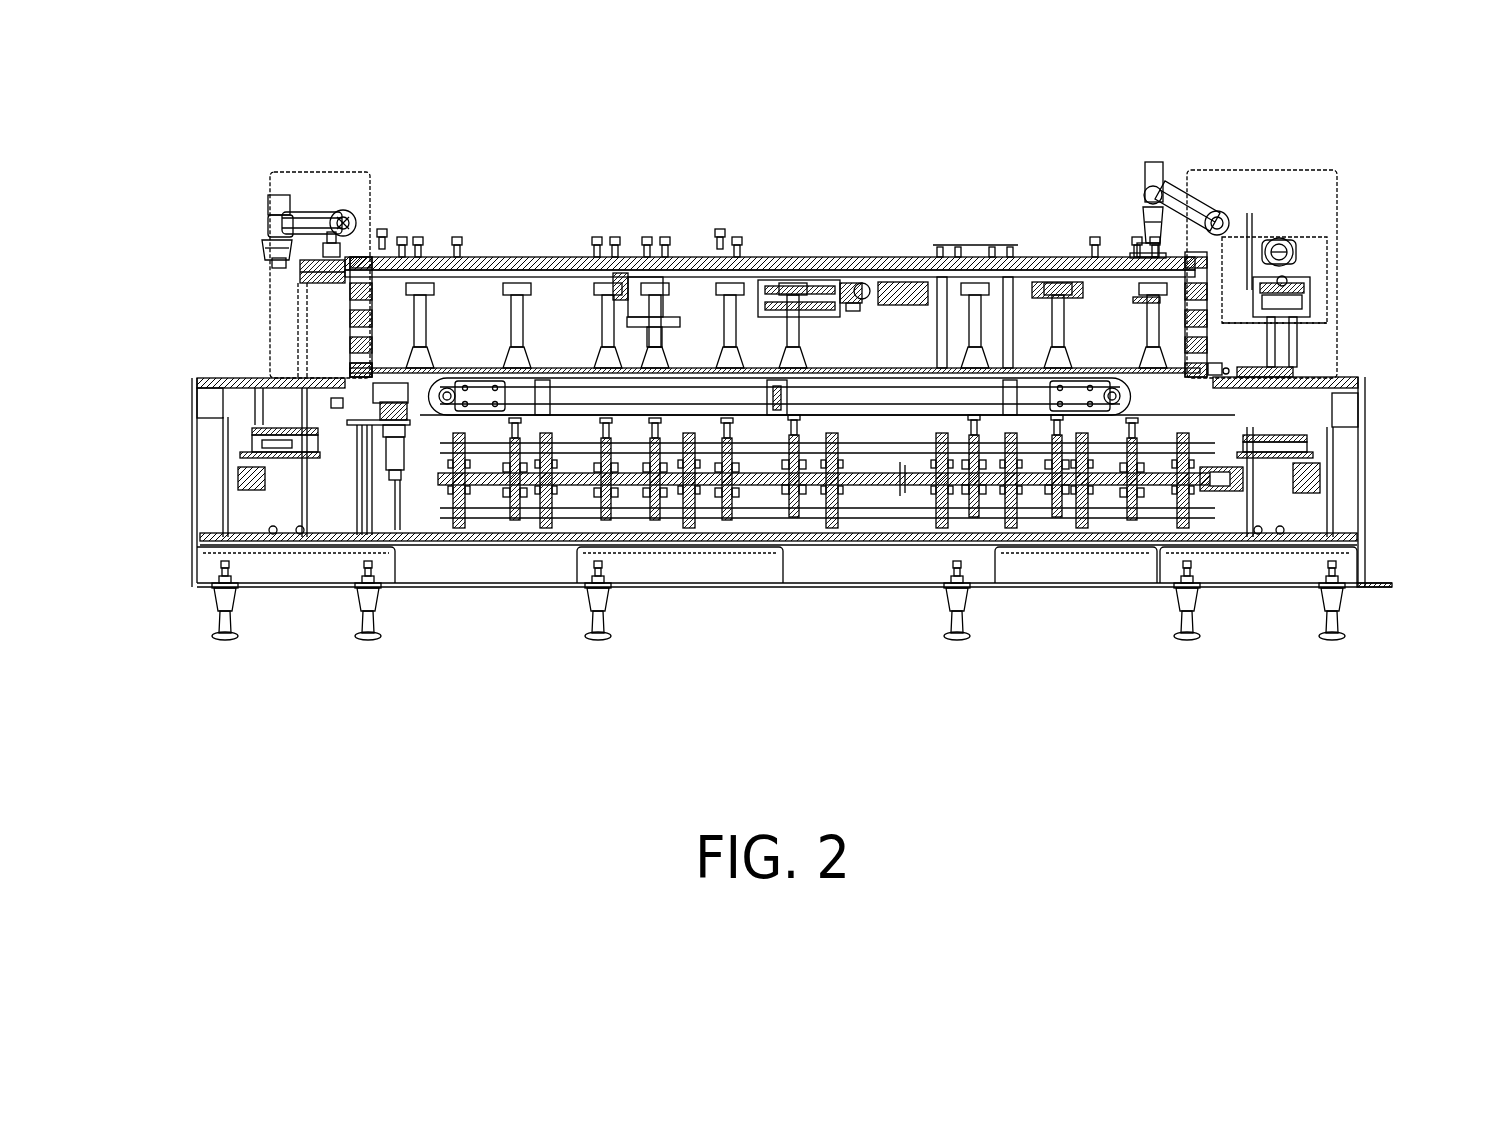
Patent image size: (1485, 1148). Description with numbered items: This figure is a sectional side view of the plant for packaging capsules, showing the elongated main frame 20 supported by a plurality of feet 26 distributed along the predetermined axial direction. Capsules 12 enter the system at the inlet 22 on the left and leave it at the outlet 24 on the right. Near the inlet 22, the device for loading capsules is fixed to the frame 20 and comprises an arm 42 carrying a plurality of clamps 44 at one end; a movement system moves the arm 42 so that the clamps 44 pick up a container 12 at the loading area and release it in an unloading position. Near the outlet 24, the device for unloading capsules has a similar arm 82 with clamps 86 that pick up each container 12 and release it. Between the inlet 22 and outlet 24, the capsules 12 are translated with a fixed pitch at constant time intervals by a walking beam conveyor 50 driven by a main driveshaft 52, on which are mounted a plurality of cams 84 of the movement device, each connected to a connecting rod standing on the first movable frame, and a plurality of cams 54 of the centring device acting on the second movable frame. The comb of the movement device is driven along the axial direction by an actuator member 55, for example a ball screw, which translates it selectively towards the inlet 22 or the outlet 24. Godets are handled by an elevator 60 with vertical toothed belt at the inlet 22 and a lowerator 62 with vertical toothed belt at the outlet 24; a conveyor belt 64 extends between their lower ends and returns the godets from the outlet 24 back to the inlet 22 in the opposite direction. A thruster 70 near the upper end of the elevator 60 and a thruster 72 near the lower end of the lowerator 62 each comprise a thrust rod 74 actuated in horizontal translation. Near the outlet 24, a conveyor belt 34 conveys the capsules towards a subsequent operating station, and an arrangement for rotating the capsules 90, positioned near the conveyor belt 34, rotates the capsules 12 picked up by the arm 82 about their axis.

The capsule 12 is at (278, 263).
The main frame 20 is at (358, 187).
The inlet 22 is at (183, 328).
The outlet 24 is at (1402, 318).
The feet 26 is at (363, 623).
The conveyor belt 34 is at (1293, 275).
The arm 42 is at (313, 215).
The clamps 44 is at (265, 253).
The walking beam conveyor 50 is at (831, 534).
The main driveshaft 52 is at (858, 485).
The cams 54 is at (528, 513).
The actuator member 55 is at (870, 280).
The elevator 60 is at (338, 345).
The lowerator 62 is at (1215, 303).
The conveyor belt 64 is at (578, 373).
The thruster 70 is at (303, 265).
The thruster 72 is at (1267, 373).
The thrust rod 74 is at (332, 258).
The arm 82 is at (1160, 190).
The cams 84 is at (612, 497).
The clamps 86 is at (1143, 225).
The arrangement for rotating the capsules 90 is at (1295, 253).